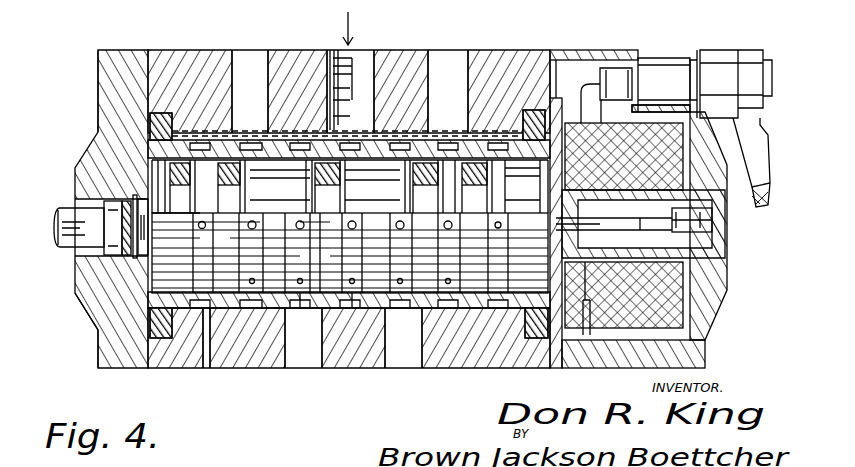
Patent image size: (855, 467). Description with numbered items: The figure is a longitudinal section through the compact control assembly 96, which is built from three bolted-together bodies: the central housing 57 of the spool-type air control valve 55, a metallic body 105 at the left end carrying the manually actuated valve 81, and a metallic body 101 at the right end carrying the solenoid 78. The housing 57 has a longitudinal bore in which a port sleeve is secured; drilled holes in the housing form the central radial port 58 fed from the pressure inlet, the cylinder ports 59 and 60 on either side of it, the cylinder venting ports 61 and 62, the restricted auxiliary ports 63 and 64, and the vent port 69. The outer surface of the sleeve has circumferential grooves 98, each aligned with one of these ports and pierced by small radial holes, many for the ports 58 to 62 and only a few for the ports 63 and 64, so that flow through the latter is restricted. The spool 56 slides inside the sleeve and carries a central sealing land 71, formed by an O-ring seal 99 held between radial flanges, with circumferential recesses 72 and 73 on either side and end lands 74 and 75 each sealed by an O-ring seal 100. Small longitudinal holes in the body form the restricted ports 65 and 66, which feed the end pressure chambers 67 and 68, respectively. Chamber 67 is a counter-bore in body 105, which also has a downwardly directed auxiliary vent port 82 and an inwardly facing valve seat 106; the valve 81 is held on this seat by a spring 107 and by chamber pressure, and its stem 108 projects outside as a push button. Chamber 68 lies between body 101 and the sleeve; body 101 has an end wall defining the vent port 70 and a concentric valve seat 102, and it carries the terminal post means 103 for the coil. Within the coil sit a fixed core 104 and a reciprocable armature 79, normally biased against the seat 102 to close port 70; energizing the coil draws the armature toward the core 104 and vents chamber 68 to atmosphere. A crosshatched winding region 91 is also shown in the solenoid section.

The control valve 55 is at (513, 42).
The spool 56 is at (530, 184).
The housing 57 is at (484, 60).
The radial port 58 is at (360, 62).
The port 59 is at (300, 368).
The port 60 is at (400, 368).
The cylinder venting port 61 is at (245, 65).
The cylinder venting port 62 is at (438, 57).
The auxiliary port 63 is at (205, 133).
The auxiliary port 64 is at (490, 122).
The restricted port 65 is at (181, 124).
The restricted port 66 is at (518, 122).
The pressure chamber 67 is at (150, 274).
The pressure chamber 68 is at (493, 186).
The vent port 69 is at (207, 368).
The vent port 70 is at (715, 220).
The sealing land 71 is at (350, 205).
The circumferential recess 72 is at (264, 186).
The circumferential recess 73 is at (355, 186).
The sealing land 74 is at (191, 186).
The sealing land 75 is at (431, 186).
The solenoid 78 is at (666, 42).
The armature 79 is at (628, 262).
The manually actuated valve 81 is at (92, 72).
The auxiliary vent port 82 is at (83, 296).
The motor winding 91 is at (624, 156).
The control assembly 96 is at (144, 25).
The circumferential grooves 98 is at (340, 310).
The O-ring seal 99 is at (267, 226).
The O-ring seal 100 is at (346, 228).
The metallic body 101 is at (705, 352).
The valve seat 102 is at (725, 245).
The terminal post means 103 is at (772, 66).
The fixed core 104 is at (586, 200).
The metallic body 105 is at (115, 343).
The valve seat 106 is at (104, 201).
The spring 107 is at (176, 213).
The stem 108 is at (70, 237).